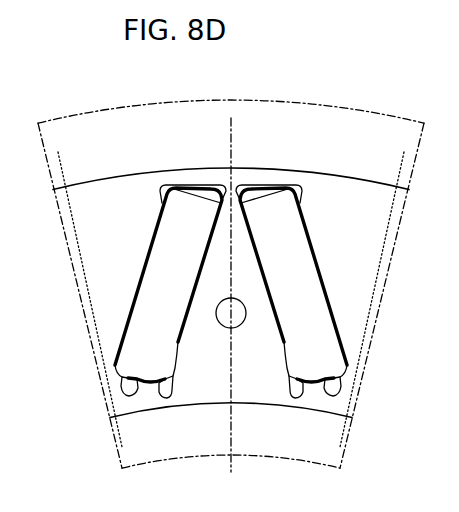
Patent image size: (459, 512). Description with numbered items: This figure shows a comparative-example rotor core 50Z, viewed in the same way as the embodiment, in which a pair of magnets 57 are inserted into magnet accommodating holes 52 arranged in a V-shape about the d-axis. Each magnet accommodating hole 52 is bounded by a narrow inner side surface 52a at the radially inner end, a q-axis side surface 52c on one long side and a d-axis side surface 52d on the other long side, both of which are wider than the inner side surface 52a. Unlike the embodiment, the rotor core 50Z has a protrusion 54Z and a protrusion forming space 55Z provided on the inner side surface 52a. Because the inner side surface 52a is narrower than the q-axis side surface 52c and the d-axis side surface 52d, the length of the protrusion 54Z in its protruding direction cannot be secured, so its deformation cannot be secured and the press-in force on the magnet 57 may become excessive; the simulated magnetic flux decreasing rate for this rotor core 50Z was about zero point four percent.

The rotor core 50Z is at (362, 176).
The magnet accommodating hole 52 is at (210, 188).
The inner side surface 52a is at (172, 394).
The q-axis side surface 52c is at (166, 350).
The d-axis side surface 52d is at (160, 246).
The protrusion 54Z is at (146, 388).
The protrusion forming space 55Z is at (129, 381).
The magnet 57 is at (178, 304).